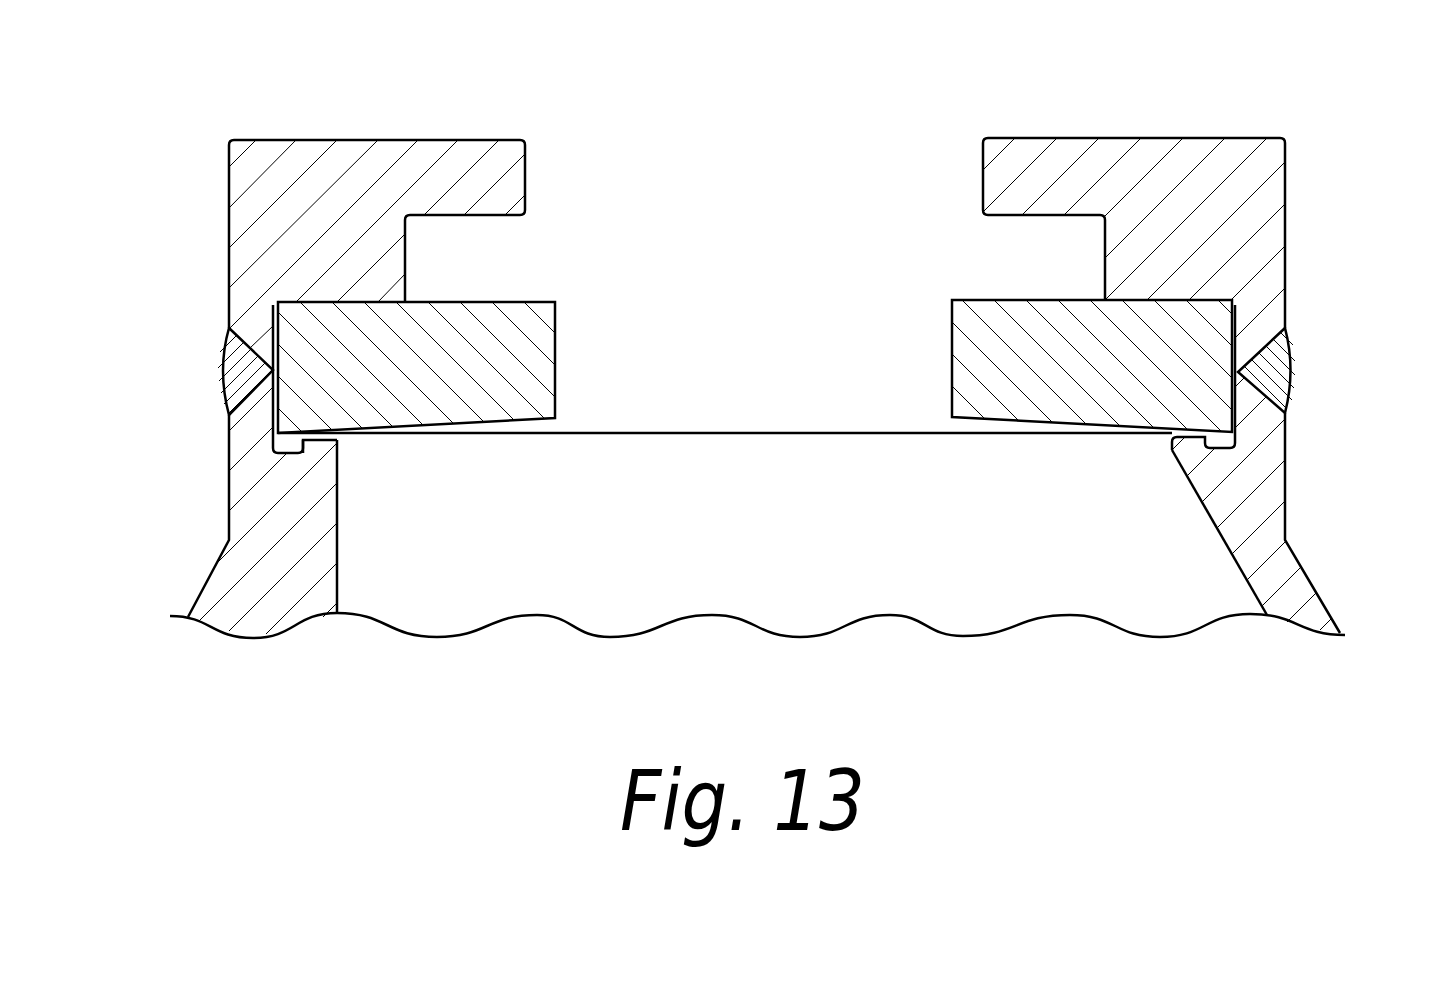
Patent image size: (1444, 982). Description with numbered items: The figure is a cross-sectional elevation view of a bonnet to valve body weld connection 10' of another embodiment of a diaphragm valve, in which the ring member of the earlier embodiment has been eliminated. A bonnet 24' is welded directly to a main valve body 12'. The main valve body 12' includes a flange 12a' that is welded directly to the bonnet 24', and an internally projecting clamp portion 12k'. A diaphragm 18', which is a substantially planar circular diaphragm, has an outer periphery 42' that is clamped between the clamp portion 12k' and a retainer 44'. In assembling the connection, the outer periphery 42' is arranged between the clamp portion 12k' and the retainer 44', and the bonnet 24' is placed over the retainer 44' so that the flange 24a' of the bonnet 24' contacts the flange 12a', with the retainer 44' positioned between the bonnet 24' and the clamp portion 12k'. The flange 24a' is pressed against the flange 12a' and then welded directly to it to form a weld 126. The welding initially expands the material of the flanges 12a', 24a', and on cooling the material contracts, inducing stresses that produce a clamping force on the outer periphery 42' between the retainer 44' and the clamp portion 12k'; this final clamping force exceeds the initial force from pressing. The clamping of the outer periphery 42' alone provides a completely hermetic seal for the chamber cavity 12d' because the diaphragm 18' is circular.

The bonnet to valve body weld connection 10' is at (308, 244).
The bonnet 24' is at (1134, 176).
The retainer 44' is at (1033, 335).
The flange 24a' is at (1321, 314).
The weld 126 is at (1282, 370).
The flange 12a' is at (1304, 424).
The main valve body 12' is at (1318, 523).
The clamp portion 12k' is at (1161, 531).
The diaphragm 18' is at (725, 494).
The outer periphery 42' is at (384, 486).
The chamber cavity 12d' is at (367, 584).